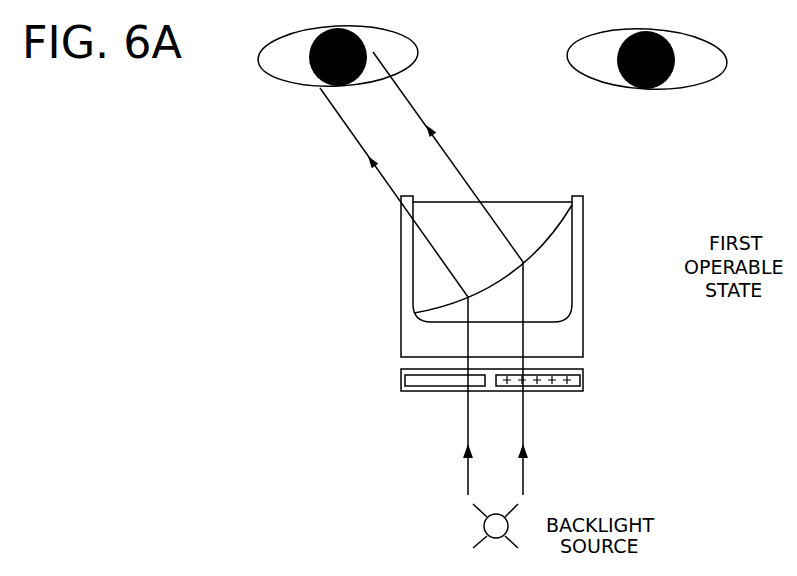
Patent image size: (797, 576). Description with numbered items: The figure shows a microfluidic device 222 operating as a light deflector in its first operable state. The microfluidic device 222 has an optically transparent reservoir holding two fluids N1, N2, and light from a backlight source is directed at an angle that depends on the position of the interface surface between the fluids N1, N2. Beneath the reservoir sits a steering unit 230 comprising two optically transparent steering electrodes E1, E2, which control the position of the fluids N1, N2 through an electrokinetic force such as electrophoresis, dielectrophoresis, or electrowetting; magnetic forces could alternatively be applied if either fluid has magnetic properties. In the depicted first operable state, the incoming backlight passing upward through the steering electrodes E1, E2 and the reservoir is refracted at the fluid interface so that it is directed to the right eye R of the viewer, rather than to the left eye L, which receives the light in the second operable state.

The microfluidic device 222 is at (538, 276).
The steering unit 230 is at (538, 384).
The steering electrode E1 is at (445, 395).
The steering electrode E2 is at (538, 395).
The fluid N1 is at (493, 259).
The fluid N2 is at (540, 220).
The right eye R is at (338, 72).
The left eye L is at (647, 75).